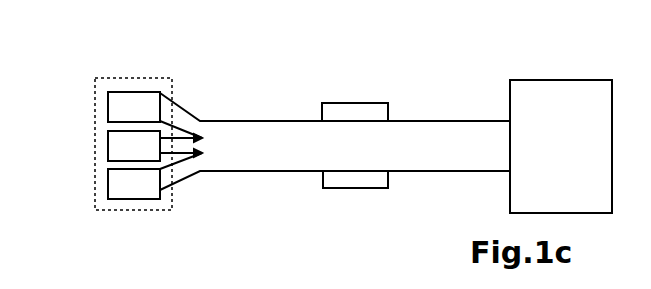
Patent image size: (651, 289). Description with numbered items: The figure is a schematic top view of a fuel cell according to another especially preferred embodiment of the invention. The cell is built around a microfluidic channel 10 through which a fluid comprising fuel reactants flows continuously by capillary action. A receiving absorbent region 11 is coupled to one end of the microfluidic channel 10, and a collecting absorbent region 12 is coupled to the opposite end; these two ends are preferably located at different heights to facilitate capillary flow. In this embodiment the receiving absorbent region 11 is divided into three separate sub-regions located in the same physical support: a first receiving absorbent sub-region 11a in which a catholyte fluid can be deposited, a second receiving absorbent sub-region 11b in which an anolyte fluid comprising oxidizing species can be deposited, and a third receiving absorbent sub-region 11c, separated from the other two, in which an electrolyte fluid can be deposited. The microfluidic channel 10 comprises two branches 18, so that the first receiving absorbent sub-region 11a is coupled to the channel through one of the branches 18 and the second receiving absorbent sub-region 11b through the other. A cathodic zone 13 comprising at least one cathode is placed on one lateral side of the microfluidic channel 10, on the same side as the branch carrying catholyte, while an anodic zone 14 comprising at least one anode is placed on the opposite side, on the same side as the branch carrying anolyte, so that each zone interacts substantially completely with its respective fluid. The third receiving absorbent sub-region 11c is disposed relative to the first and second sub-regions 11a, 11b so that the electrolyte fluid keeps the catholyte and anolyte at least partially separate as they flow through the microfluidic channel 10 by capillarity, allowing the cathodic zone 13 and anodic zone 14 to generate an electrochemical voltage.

The microfluidic channel 10 is at (283, 148).
The receiving absorbent region 11 is at (103, 78).
The first receiving absorbent sub-region 11a is at (133, 105).
The second receiving absorbent sub-region 11b is at (133, 182).
The third receiving absorbent sub-region 11c is at (128, 146).
The collecting absorbent region 12 is at (560, 120).
The cathodic zone 13 is at (355, 115).
The anodic zone 14 is at (355, 182).
The branches 18 is at (188, 165).